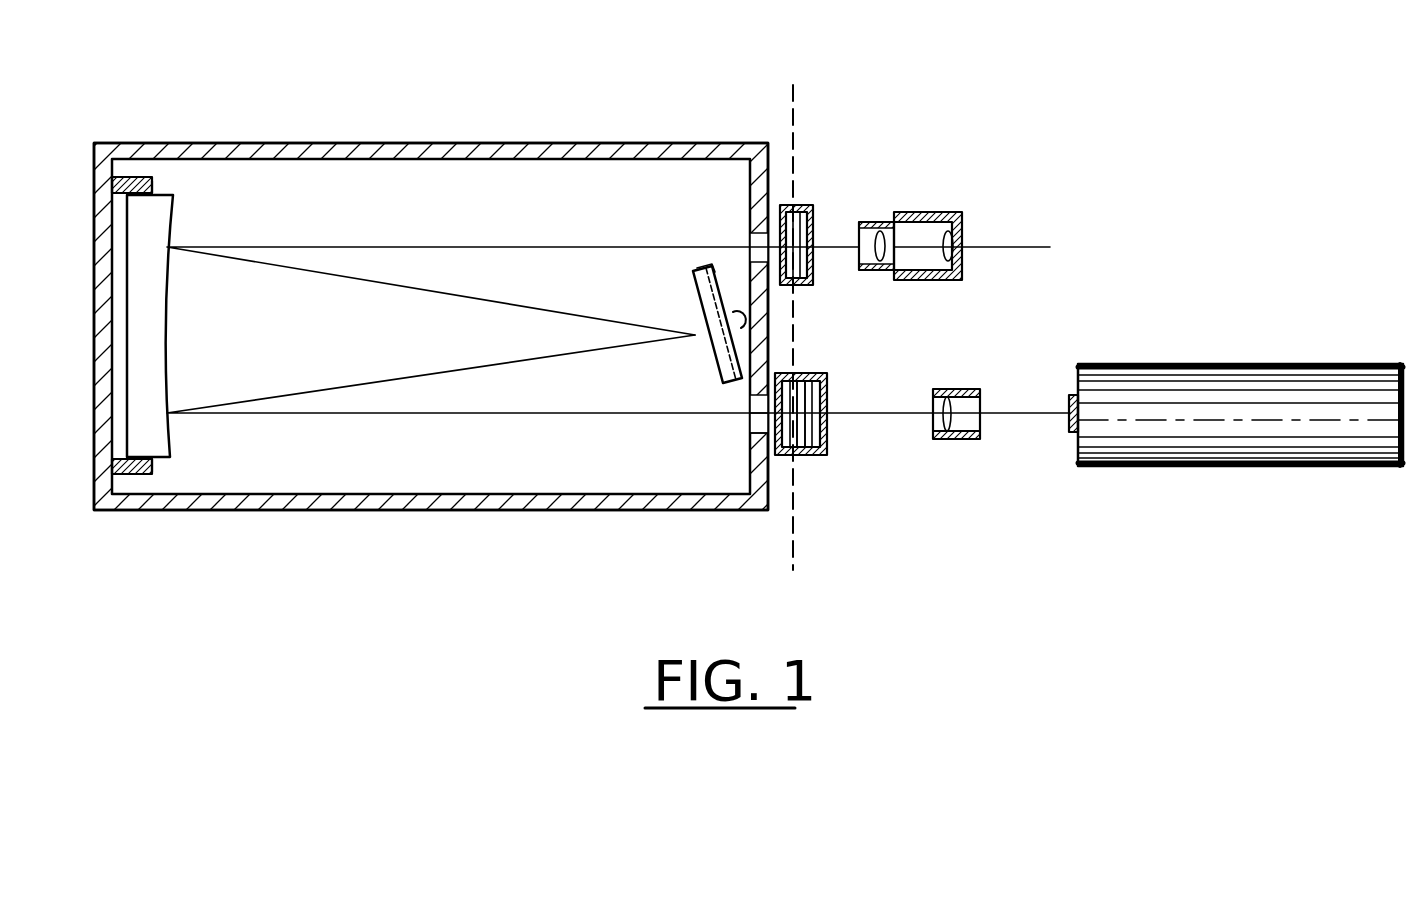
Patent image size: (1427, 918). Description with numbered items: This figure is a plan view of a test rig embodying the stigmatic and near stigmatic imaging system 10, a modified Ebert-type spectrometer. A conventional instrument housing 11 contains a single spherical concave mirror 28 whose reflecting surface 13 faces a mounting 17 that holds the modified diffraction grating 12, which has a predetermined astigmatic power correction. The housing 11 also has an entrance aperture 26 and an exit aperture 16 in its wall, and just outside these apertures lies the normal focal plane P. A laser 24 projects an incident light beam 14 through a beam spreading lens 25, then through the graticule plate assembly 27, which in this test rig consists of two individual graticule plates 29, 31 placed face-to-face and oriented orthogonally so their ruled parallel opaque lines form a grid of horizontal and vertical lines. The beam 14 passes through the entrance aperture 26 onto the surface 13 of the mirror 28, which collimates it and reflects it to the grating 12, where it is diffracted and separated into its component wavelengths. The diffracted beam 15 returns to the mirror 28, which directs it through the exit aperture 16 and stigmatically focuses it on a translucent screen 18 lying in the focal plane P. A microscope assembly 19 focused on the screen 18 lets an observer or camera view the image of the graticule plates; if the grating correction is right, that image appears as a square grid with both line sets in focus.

The stigmatic and near stigmatic imaging system 10 is at (290, 112).
The instrument housing 11 is at (287, 511).
The modified plane diffraction grating 12 is at (693, 290).
The spherical concave reflecting surface 13 is at (172, 216).
The incident light beam 14 is at (445, 420).
The diffracted beam 15 is at (443, 262).
The exit aperture 16 is at (748, 237).
The mounting 17 is at (730, 390).
The translucent screen 18 is at (812, 240).
The microscope assembly 19 is at (940, 212).
The laser 24 is at (1213, 364).
The beam spreading lens 25 is at (958, 389).
The entrance aperture 26 is at (750, 418).
The graticule plate assembly 27 is at (757, 437).
The spherical concave mirror 28 is at (170, 462).
The graticule plate 29 is at (832, 397).
The graticule plate 31 is at (826, 430).
The focal plane P is at (797, 102).